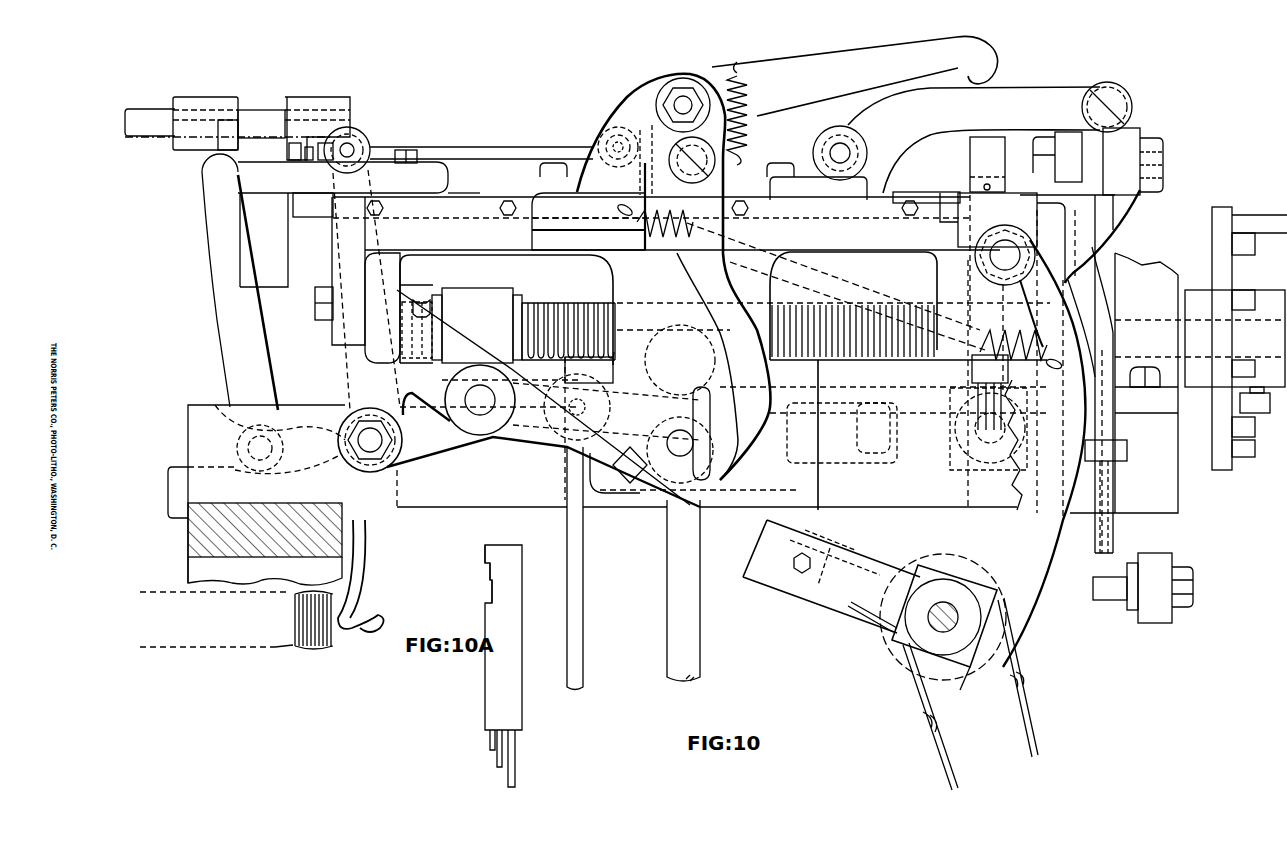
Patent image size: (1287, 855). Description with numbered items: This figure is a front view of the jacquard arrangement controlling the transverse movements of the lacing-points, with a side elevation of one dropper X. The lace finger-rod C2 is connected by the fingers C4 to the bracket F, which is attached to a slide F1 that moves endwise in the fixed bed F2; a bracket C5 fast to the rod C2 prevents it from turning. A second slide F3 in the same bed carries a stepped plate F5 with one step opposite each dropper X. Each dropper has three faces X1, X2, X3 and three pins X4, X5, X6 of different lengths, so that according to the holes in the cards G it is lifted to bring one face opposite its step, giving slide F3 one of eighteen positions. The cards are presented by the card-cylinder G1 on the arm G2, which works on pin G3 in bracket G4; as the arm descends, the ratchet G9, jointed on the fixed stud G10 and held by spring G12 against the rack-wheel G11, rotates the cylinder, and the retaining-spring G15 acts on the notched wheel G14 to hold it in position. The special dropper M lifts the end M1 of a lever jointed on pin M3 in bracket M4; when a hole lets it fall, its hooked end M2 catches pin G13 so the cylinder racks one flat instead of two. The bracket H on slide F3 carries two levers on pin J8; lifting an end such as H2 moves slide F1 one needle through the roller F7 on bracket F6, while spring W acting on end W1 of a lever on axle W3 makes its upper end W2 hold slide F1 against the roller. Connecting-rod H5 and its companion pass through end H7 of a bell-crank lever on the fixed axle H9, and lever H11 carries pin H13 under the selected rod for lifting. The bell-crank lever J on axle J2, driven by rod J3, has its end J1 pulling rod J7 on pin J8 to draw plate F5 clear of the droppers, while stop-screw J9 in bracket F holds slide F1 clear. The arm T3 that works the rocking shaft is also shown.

In FIG. 10, the lace finger-rod C2 is at (227, 123).
In FIG. 10, the brackets or fingers C4 is at (261, 128).
In FIG. 10, the upright or bracket F is at (343, 212).
In FIG. 10, the end of bell-crank lever J1 is at (356, 133).
In FIG. 10, the connecting-rod J7 is at (455, 147).
In FIG. 10, the upper end of lever W2 is at (240, 282).
In FIG. 10, the stop-screw J9 is at (311, 165).
In FIG. 10, the slide F1 is at (470, 195).
In FIG. 10, the fixed bed F2 is at (657, 271).
In FIG. 10, the bracket F6 is at (538, 182).
In FIG. 10, the truck or roller F7 is at (606, 135).
In FIG. 10, the bracket M4 is at (588, 206).
In FIG. 10, the pin or axle M3 is at (683, 105).
In FIG. 10, the second slide F3 is at (755, 196).
In FIG. 10, the end of lever M1 is at (855, 76).
In FIG. 10, the pin J8 is at (842, 127).
In FIG. 10, the lever end H2 is at (990, 137).
In FIG. 10, the bracket H is at (817, 182).
In FIG. 10, the stepped plate F5 is at (932, 193).
In FIG. 10, the special dropper M is at (987, 164).
In FIG. 10, the arm T3 is at (1086, 161).
In FIG. 10, the fixed pin or axle H9 is at (1165, 178).
In FIG. 10, the fixed pin or stud G10 is at (1005, 255).
In FIG. 10, the spring G12 is at (836, 284).
In FIG. 10, the bracket G4 is at (382, 308).
In FIG. 10, the pin G3 is at (462, 361).
In FIG. 10, the bell-crank lever J is at (543, 398).
In FIG. 10, the fixed pin or axle J2 is at (367, 338).
In FIG. 10, the pin or axle W3 is at (216, 403).
In FIG. 10, the lever end W1 is at (370, 575).
In FIG. 10, the spring W is at (243, 645).
In FIG. 10, the pin or axle G13 is at (676, 452).
In FIG. 10, the hooked end of lever M2 is at (673, 277).
In FIG. 10, the arm or bracket G2 is at (743, 458).
In FIG. 10, the ratchet or rack G9 is at (1004, 429).
In FIG. 10, the end of bell-crank lever H7 is at (1106, 374).
In FIG. 10, the connecting-rod H5 is at (1114, 529).
In FIG. 10, the pin or axle H13 is at (1115, 586).
In FIG. 10, the lever H11 is at (1165, 588).
In FIG. 10, the bracket C5 is at (683, 590).
In FIG. 10, the connecting-rod J3 is at (585, 610).
In FIG. 10, the notched wheel G14 is at (946, 555).
In FIG. 10, the retaining-spring G15 is at (846, 626).
In FIG. 10, the card-cylinder G1 is at (900, 648).
In FIG. 10, the rack-wheel G11 is at (964, 689).
In FIG. 10, the set of cards G is at (1019, 700).
In FIG. 10A, the dropper X is at (503, 637).
In FIG. 10A, the step or face X1 is at (490, 593).
In FIG. 10A, the step or face X2 is at (488, 574).
In FIG. 10A, the step or face X3 is at (483, 553).
In FIG. 10A, the pin X4 is at (508, 786).
In FIG. 10A, the pin X5 is at (496, 767).
In FIG. 10A, the pin X6 is at (489, 745).